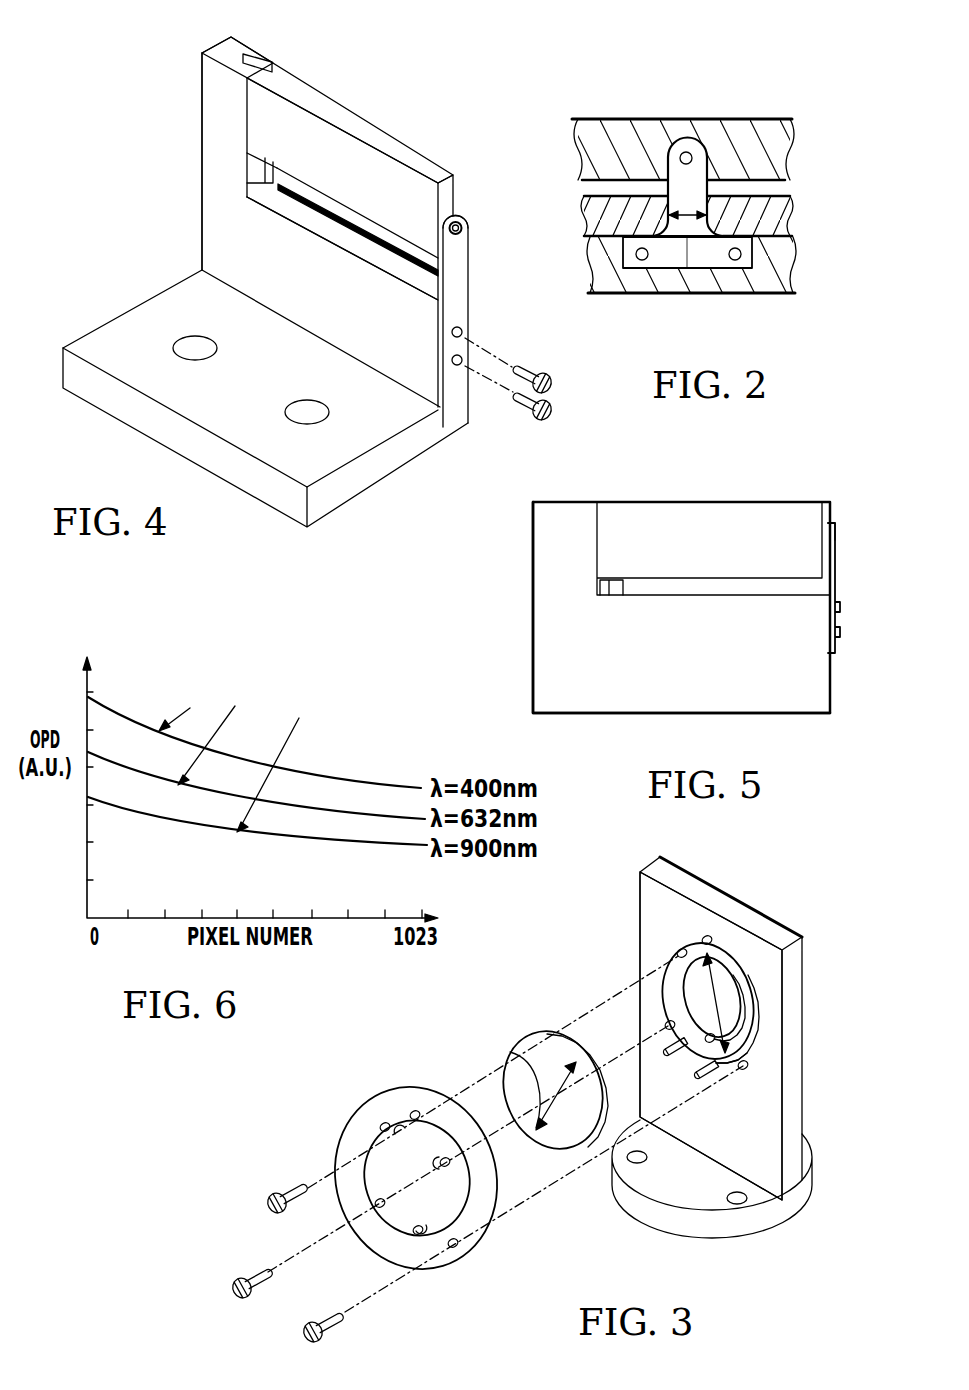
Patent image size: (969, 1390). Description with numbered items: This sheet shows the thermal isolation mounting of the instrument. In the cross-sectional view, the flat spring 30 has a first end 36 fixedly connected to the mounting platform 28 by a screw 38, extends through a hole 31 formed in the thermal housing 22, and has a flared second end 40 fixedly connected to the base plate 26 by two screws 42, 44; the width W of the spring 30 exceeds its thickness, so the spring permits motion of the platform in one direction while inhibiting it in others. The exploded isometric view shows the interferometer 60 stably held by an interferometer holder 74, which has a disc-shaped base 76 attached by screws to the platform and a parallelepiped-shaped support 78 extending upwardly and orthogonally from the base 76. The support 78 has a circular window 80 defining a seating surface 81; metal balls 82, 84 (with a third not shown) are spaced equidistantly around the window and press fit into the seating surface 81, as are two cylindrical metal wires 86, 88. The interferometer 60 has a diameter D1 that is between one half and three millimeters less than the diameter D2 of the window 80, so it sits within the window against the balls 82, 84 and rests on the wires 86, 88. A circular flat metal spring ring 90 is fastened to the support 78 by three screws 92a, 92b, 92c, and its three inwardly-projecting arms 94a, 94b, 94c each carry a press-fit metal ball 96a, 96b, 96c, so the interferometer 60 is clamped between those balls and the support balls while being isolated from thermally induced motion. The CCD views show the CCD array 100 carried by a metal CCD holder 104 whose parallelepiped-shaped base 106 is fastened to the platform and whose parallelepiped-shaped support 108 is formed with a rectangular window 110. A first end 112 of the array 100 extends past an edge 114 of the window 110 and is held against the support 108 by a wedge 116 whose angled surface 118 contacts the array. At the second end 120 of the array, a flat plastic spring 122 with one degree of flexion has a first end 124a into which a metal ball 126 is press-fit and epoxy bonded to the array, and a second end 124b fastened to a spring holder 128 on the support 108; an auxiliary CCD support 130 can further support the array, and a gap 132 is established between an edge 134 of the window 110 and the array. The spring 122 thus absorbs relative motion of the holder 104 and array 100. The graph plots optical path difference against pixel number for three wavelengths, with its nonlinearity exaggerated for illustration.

In FIG. 2, the thermal housing 22 is at (778, 220).
In FIG. 2, the base plate 26 is at (790, 258).
In FIG. 2, the mounting platform 28 is at (773, 123).
In FIG. 2, the spring 30 is at (697, 173).
In FIG. 2, the hole 31 is at (653, 205).
In FIG. 2, the first end 36 is at (681, 148).
In FIG. 2, the screw 38 is at (692, 153).
In FIG. 2, the flared second end 40 is at (699, 262).
In FIG. 2, the screw 42 is at (644, 270).
In FIG. 2, the screw 44 is at (738, 262).
In FIG. 2, the width W is at (686, 270).
In FIG. 3, the interferometer 60 is at (541, 1037).
In FIG. 3, the interferometer holder 74 is at (805, 1110).
In FIG. 3, the disc-shaped base 76 is at (760, 1220).
In FIG. 3, the parallelepiped-shaped support 78 is at (793, 960).
In FIG. 3, the circular window 80 is at (732, 987).
In FIG. 3, the seating surface 81 is at (677, 983).
In FIG. 3, the metal ball 82 is at (680, 953).
In FIG. 3, the metal ball 84 is at (737, 1020).
In FIG. 3, the metal wire 86 is at (708, 1084).
In FIG. 3, the metal wire 88 is at (660, 1048).
In FIG. 3, the spring ring 90 is at (350, 1147).
In FIG. 3, the screw 92a is at (277, 1192).
In FIG. 3, the screw 92b is at (242, 1280).
In FIG. 3, the screw 92c is at (338, 1322).
In FIG. 3, the inwardly-projecting arm 94a is at (402, 1127).
In FIG. 3, the inwardly-projecting arm 94b is at (438, 1236).
In FIG. 3, the inwardly-projecting arm 94c is at (480, 1220).
In FIG. 3, the metal ball 96a is at (386, 1123).
In FIG. 3, the metal ball 96b is at (420, 1232).
In FIG. 3, the metal ball 96c is at (452, 1161).
In FIG. 3, the diameter of interferometer D1 is at (510, 1060).
In FIG. 3, the diameter of window D2 is at (717, 1003).
In FIG. 5, the CCD array 100 is at (723, 502).
In FIG. 4, the CCD holder 104 is at (370, 423).
In FIG. 4, the parallelepiped-shaped base 106 is at (323, 505).
In FIG. 4, the parallelepiped-shaped support 108 is at (220, 237).
In FIG. 5, the parallelepiped-shaped support 108 is at (543, 634).
In FIG. 4, the rectangular window 110 is at (428, 263).
In FIG. 4, the first end 112 is at (286, 84).
In FIG. 4, the edge 114 is at (243, 110).
In FIG. 4, the wedge 116 is at (222, 52).
In FIG. 4, the angled surface 118 is at (245, 56).
In FIG. 4, the second end 120 is at (447, 176).
In FIG. 4, the flat plastic spring 122 is at (458, 293).
In FIG. 5, the flat plastic spring 122 is at (836, 580).
In FIG. 4, the first end 124a is at (463, 229).
In FIG. 4, the second end 124b is at (452, 370).
In FIG. 4, the metal ball 126 is at (458, 213).
In FIG. 5, the metal ball 126 is at (836, 540).
In FIG. 4, the spring holder 128 is at (440, 327).
In FIG. 4, the auxiliary CCD support 130 is at (250, 167).
In FIG. 5, the auxiliary CCD support 130 is at (630, 577).
In FIG. 4, the gap 132 is at (297, 183).
In FIG. 4, the edge 134 is at (347, 200).